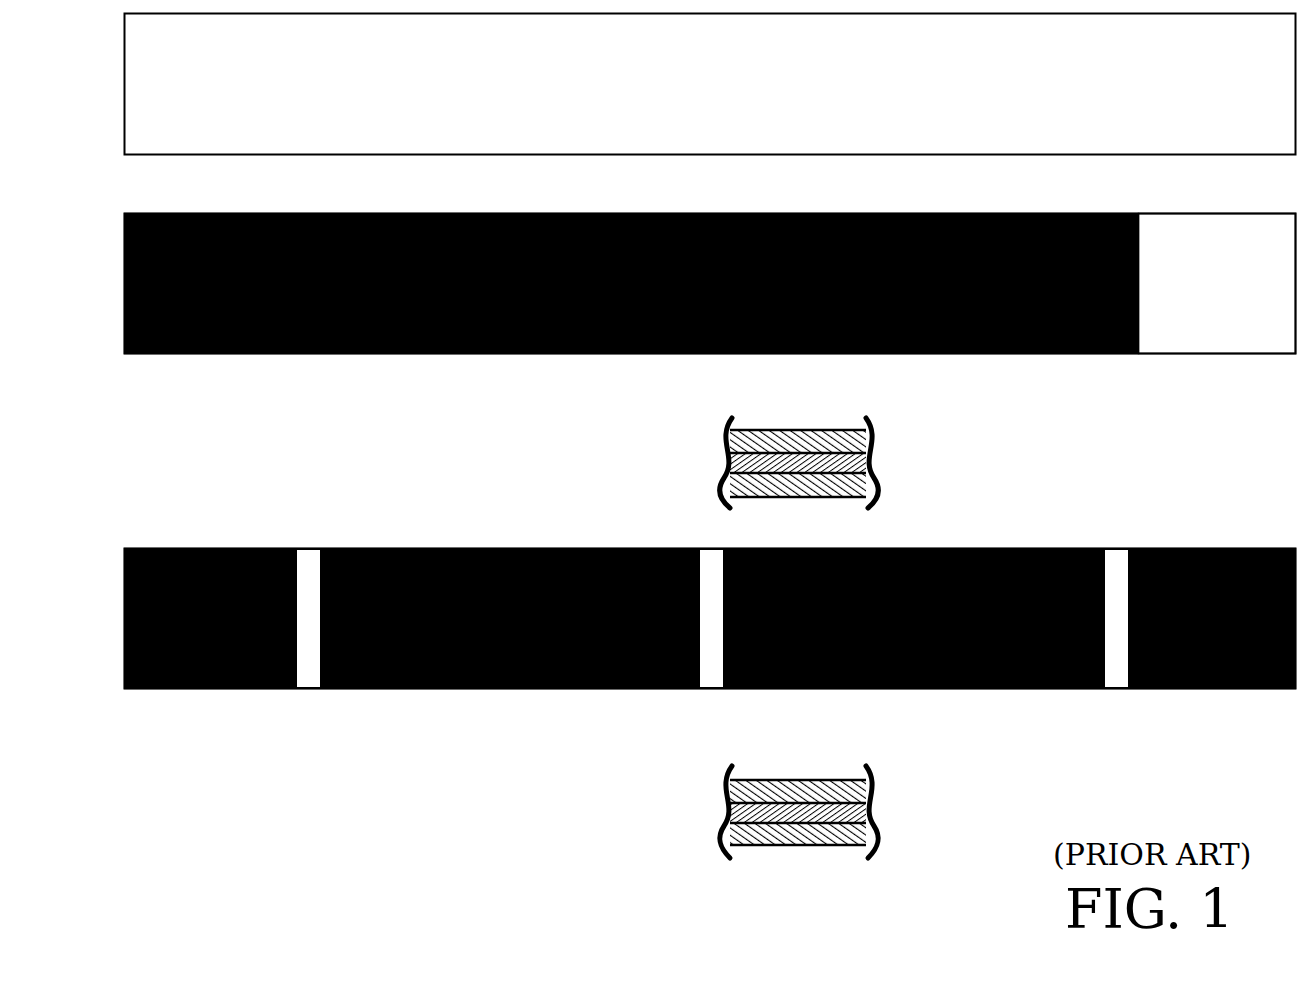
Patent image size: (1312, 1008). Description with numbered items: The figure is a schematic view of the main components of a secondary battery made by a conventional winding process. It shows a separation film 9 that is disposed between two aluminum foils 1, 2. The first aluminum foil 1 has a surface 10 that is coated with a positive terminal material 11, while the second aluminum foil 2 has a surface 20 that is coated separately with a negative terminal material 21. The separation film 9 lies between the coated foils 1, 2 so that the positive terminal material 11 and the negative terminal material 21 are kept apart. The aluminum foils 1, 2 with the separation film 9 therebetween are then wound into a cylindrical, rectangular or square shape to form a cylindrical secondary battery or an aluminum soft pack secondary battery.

The separation film 9 is at (438, 122).
The aluminum foil 2 is at (1287, 283).
The negative terminal material 21 is at (907, 233).
The surface 20 is at (1168, 233).
The aluminum foil 1 is at (1287, 612).
The positive terminal material 11 is at (963, 567).
The surface 10 is at (1106, 612).